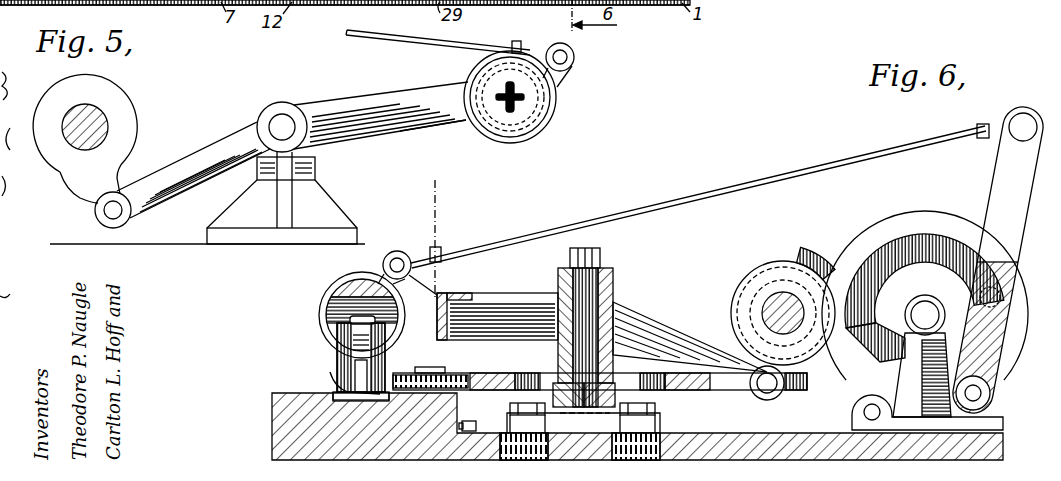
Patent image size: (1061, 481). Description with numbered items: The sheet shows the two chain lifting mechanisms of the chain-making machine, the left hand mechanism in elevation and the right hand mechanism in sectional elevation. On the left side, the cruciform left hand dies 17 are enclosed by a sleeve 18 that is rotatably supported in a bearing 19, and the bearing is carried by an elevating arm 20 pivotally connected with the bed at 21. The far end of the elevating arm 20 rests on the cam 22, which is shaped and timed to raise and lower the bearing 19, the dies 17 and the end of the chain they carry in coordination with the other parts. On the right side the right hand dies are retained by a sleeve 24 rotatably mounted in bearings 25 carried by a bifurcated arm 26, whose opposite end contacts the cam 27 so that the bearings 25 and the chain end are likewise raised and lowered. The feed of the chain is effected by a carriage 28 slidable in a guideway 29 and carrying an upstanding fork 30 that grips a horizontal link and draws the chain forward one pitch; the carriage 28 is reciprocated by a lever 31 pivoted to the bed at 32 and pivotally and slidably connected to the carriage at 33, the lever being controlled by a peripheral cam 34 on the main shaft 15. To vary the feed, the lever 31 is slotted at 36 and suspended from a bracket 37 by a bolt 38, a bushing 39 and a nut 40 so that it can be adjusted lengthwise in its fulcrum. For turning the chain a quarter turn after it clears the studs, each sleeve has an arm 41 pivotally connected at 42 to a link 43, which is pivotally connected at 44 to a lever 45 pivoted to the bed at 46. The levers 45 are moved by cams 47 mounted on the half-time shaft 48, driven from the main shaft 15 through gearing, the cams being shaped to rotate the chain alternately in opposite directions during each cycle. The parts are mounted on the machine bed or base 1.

In FIG. 6, the base plate 1 is at (765, 436).
In FIG. 5, the main shaft 15 is at (98, 112).
In FIG. 6, the main shaft 15 is at (780, 303).
In FIG. 5, the left hand dies 17 is at (547, 121).
In FIG. 6, the left hand dies 17 is at (362, 315).
In FIG. 5, the sleeve 18 is at (500, 140).
In FIG. 5, the bearing 19 is at (461, 122).
In FIG. 5, the elevating arm 20 is at (352, 140).
In FIG. 5, the pivot 21 is at (276, 110).
In FIG. 5, the cam 22 is at (122, 112).
In FIG. 6, the sleeve 24 is at (340, 298).
In FIG. 6, the bearings 25 is at (330, 318).
In FIG. 6, the bifurcated arm 26 is at (494, 300).
In FIG. 6, the cam 27 is at (805, 252).
In FIG. 6, the carriage 28 is at (333, 393).
In FIG. 6, the guideway 29 is at (310, 427).
In FIG. 6, the fork 30 is at (345, 343).
In FIG. 6, the lever 31 is at (505, 393).
In FIG. 6, the pivot 32 is at (599, 251).
In FIG. 6, the pivotal and sliding connection 33 is at (440, 373).
In FIG. 6, the peripheral cam 34 is at (745, 292).
In FIG. 6, the slot 36 is at (527, 405).
In FIG. 6, the bracket 37 is at (560, 282).
In FIG. 6, the bolt 38 is at (613, 283).
In FIG. 6, the bushing 39 is at (616, 302).
In FIG. 6, the nut 40 is at (720, 390).
In FIG. 5, the arms 41 is at (566, 70).
In FIG. 6, the arms 41 is at (376, 272).
In FIG. 5, the pivots 42 is at (575, 57).
In FIG. 6, the pivots 42 is at (431, 250).
In FIG. 5, the links 43 is at (373, 40).
In FIG. 6, the links 43 is at (539, 230).
In FIG. 6, the pivots 44 is at (1025, 113).
In FIG. 6, the levers 45 is at (1001, 182).
In FIG. 6, the pivots 46 is at (993, 395).
In FIG. 6, the cams 47 is at (906, 220).
In FIG. 6, the half-time shaft 48 is at (924, 304).